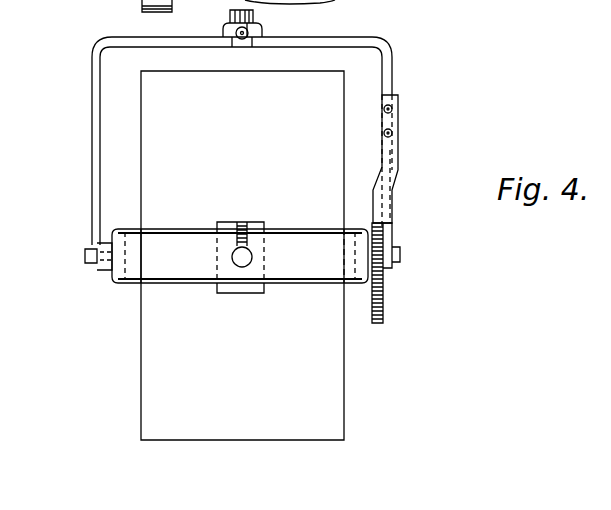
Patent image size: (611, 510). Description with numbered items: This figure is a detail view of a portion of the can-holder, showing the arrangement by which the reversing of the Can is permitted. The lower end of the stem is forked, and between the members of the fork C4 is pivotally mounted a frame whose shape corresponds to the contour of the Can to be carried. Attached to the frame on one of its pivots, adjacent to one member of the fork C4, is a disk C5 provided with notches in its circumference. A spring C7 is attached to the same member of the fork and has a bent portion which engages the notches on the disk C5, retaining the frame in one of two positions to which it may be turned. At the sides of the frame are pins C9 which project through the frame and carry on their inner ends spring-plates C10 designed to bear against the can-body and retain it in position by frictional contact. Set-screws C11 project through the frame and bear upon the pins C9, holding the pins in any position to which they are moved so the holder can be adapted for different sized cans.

The forked lower end of the stem C4 is at (383, 40).
The disk C5 is at (382, 298).
The spring C7 is at (390, 152).
The pins C9 is at (240, 258).
The spring-plates C10 is at (257, 220).
The set-screws C11 is at (235, 225).
The can Can is at (242, 255).